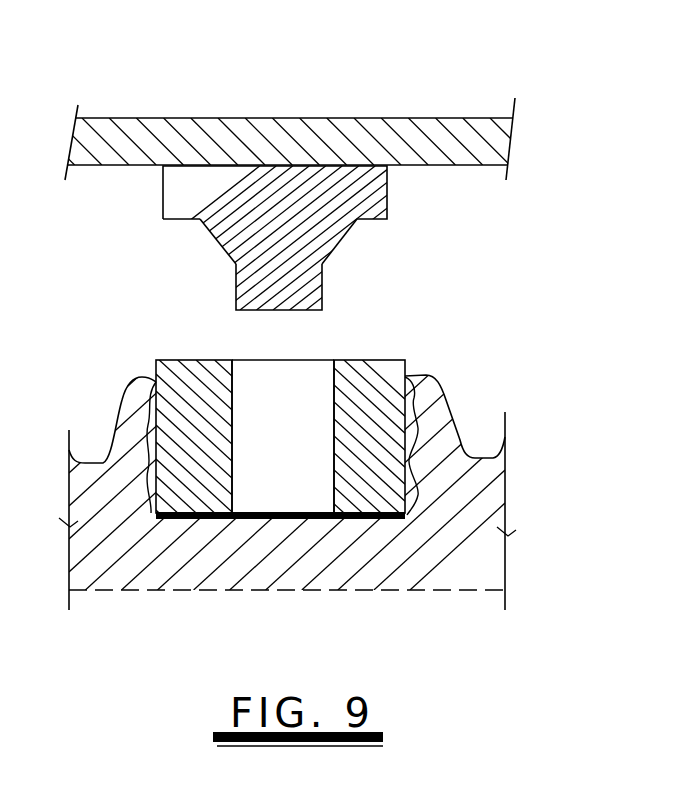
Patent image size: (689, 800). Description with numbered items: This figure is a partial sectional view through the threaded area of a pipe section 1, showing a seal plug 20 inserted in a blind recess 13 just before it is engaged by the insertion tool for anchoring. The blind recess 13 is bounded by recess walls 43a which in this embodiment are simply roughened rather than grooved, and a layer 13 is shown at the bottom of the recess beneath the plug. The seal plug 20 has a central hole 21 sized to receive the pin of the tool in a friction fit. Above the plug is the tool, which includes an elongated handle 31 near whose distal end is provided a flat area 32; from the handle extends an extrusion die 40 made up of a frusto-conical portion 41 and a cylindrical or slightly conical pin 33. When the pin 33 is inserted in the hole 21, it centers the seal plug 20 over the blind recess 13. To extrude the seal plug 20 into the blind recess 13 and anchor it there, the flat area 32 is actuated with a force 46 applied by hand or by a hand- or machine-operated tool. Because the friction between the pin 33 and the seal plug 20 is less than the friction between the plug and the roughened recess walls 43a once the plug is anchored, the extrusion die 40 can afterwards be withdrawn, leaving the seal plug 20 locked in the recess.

The substrate 1 is at (353, 567).
The blind recess 13 is at (205, 489).
The seal plug 20 is at (370, 388).
The hole 21 is at (267, 382).
The elongated handle 31 is at (403, 140).
The flat area 32 is at (130, 118).
The pin 33 is at (298, 290).
The extrusion die 40 is at (373, 193).
The frusto-conical portion 41 is at (216, 240).
The recess walls 43a is at (397, 449).
The force 46 is at (275, 88).